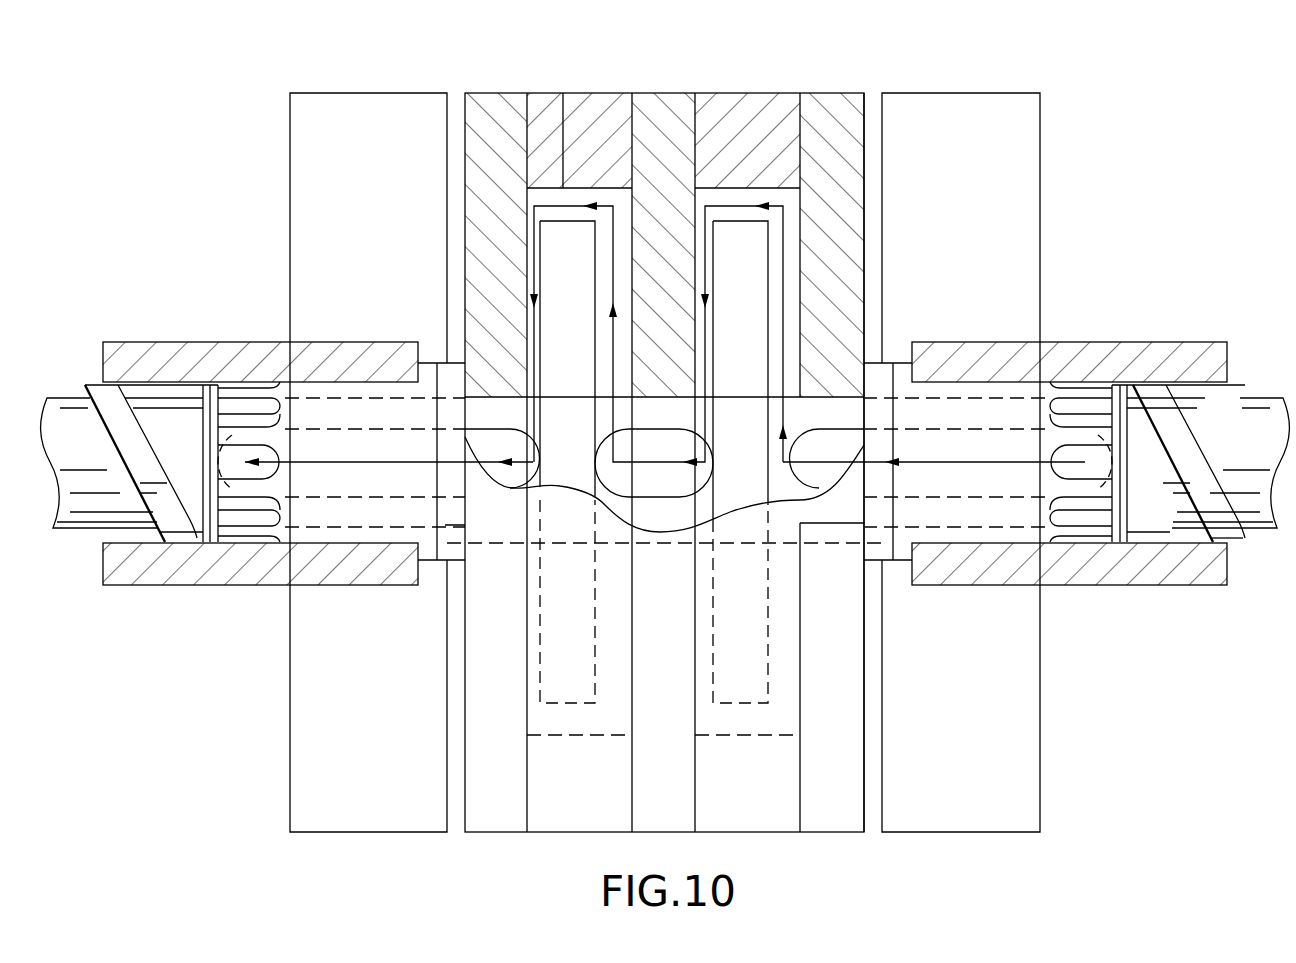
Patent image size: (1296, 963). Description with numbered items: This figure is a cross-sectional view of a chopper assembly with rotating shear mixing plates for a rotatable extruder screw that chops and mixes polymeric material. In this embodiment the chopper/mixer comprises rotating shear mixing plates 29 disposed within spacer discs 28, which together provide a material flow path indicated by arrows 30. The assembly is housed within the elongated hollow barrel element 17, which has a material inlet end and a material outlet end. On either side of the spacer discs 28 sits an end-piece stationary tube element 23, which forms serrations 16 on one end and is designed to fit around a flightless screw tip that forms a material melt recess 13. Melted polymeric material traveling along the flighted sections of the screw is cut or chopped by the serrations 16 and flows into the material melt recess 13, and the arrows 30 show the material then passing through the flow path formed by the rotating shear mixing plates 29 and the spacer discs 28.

The material melt recess 13 is at (1040, 430).
The serrations 16 is at (1103, 418).
The elongated hollow barrel element 17 is at (1118, 592).
The end-piece stationary tube element 23 is at (950, 393).
The spacer discs 28 is at (756, 93).
The rotating shear mixing plates 29 is at (558, 222).
The arrows 30 is at (962, 457).